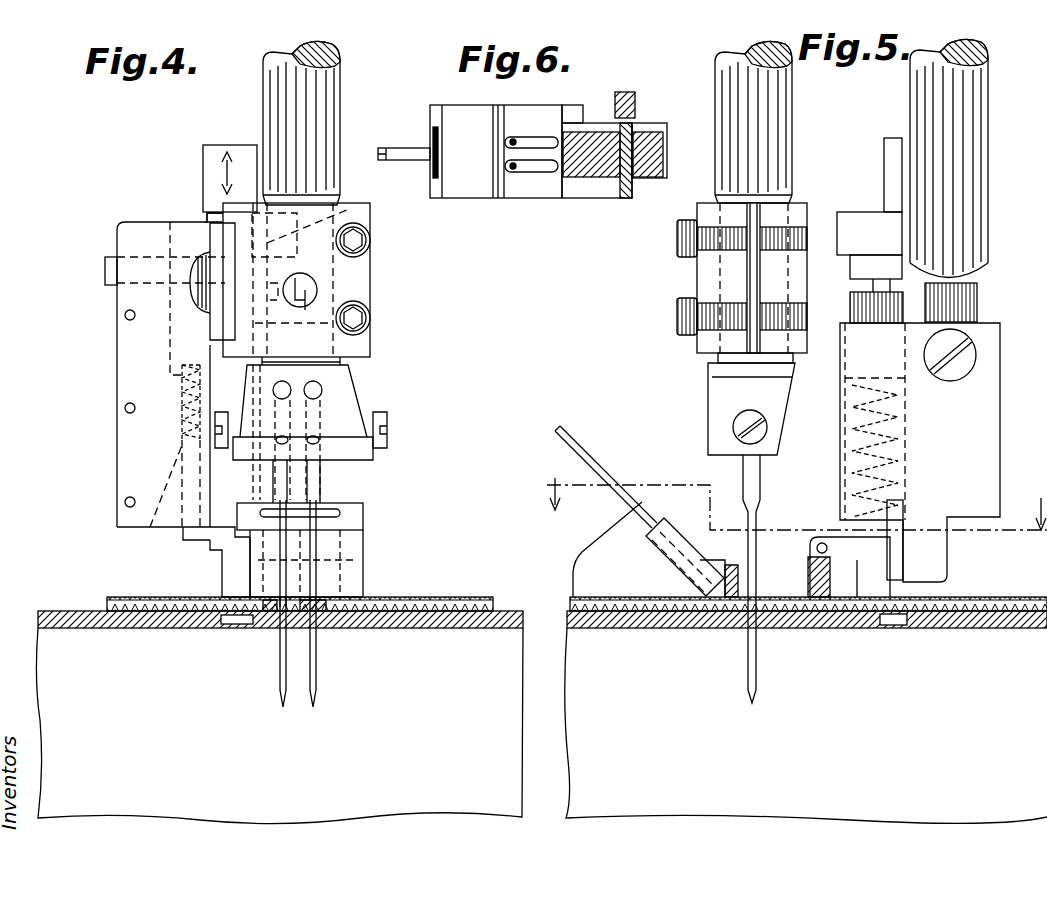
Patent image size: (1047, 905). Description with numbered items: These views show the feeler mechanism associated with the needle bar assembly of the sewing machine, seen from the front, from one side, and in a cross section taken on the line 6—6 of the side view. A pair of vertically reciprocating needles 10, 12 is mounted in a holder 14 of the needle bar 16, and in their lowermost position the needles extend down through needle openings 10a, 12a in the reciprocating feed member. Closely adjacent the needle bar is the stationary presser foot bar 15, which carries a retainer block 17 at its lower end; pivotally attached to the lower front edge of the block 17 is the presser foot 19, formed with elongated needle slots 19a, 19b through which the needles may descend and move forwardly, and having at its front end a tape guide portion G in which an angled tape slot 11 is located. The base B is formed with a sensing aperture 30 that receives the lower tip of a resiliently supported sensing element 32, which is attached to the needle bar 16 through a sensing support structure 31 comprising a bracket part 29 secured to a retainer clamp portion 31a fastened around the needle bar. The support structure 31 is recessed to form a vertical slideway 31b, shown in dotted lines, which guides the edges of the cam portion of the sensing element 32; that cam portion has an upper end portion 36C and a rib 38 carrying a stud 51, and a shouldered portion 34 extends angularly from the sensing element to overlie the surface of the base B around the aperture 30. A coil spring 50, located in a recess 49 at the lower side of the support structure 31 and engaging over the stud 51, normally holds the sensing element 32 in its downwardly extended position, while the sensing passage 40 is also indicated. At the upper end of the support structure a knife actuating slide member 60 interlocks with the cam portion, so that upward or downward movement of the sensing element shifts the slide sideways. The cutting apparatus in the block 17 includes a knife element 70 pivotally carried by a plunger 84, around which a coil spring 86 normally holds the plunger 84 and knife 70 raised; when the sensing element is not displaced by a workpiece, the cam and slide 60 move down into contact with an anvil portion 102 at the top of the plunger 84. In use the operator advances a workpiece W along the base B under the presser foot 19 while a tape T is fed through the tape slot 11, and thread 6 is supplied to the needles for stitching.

In FIG. 4, the needle 10 is at (279, 676).
In FIG. 6, the needle 10 is at (513, 138).
In FIG. 4, the needle opening 10a is at (268, 620).
In FIG. 4, the tape slot 11 is at (325, 512).
In FIG. 6, the tape slot 11 is at (434, 133).
In FIG. 4, the needle 12 is at (318, 676).
In FIG. 6, the needle 12 is at (514, 170).
In FIG. 5, the needle 12 is at (758, 641).
In FIG. 4, the needle opening 12a is at (326, 622).
In FIG. 4, the holder 14 is at (352, 405).
In FIG. 5, the holder 14 is at (730, 393).
In FIG. 5, the presser foot bar 15 is at (972, 110).
In FIG. 4, the needle bar 16 is at (275, 88).
In FIG. 5, the needle bar 16 is at (776, 102).
In FIG. 5, the retainer block 17 is at (975, 456).
In FIG. 6, the presser foot element 19 is at (548, 192).
In FIG. 5, the presser foot element 19 is at (849, 595).
In FIG. 6, the needle slot 19a is at (530, 140).
In FIG. 6, the needle slot 19b is at (536, 173).
In FIG. 5, the bracket part 29 is at (822, 215).
In FIG. 4, the sensing aperture 30 is at (220, 622).
In FIG. 6, the sensing aperture 30 is at (637, 110).
In FIG. 5, the sensing aperture 30 is at (893, 624).
In FIG. 4, the sensing support structure 31 is at (120, 373).
In FIG. 4, the retainer clamp portion 31a is at (355, 270).
In FIG. 5, the retainer clamp portion 31a is at (700, 273).
In FIG. 4, the vertical slideway 31b is at (335, 214).
In FIG. 4, the sensing element 32 is at (230, 578).
In FIG. 6, the sensing element 32 is at (631, 96).
In FIG. 4, the shouldered portion 34 is at (193, 531).
In FIG. 4, the upper end portion 36C is at (205, 168).
In FIG. 4, the guide or rib 38 is at (162, 526).
In FIG. 4, the passage 40 is at (170, 330).
In FIG. 4, the recess 49 is at (182, 405).
In FIG. 4, the coil spring 50 is at (183, 430).
In FIG. 4, the stud 51 is at (182, 448).
In FIG. 4, the knife actuating slide member 60 is at (107, 268).
In FIG. 5, the knife element 70 is at (893, 554).
In FIG. 5, the plunger 84 is at (855, 460).
In FIG. 5, the coil spring 86 is at (898, 448).
In FIG. 5, the anvil portion 102 is at (852, 282).
In FIG. 5, the thread 6 is at (796, 527).
In FIG. 4, the base B is at (456, 620).
In FIG. 5, the base B is at (668, 620).
In FIG. 4, the workpiece W is at (412, 603).
In FIG. 5, the workpiece W is at (808, 604).
In FIG. 4, the tape T is at (332, 592).
In FIG. 5, the tape T is at (605, 470).
In FIG. 5, the tape guide portion G is at (608, 556).